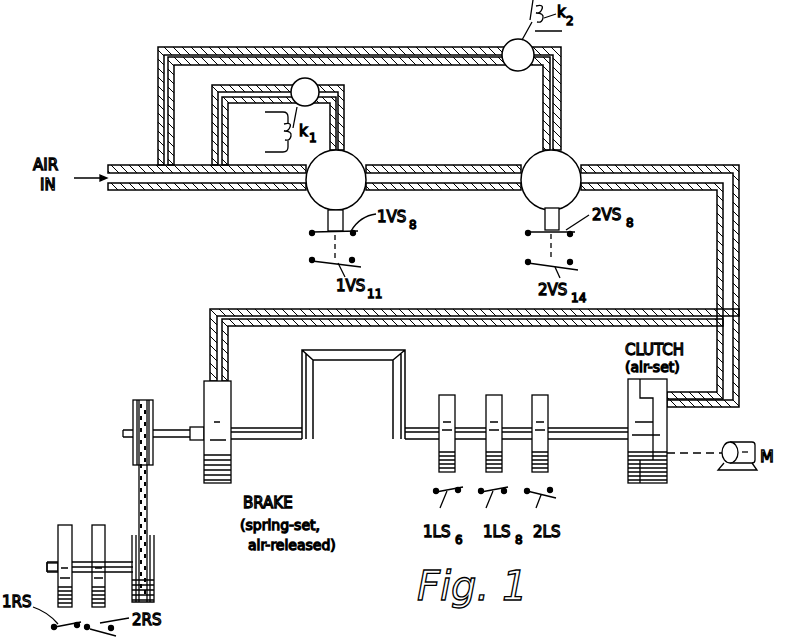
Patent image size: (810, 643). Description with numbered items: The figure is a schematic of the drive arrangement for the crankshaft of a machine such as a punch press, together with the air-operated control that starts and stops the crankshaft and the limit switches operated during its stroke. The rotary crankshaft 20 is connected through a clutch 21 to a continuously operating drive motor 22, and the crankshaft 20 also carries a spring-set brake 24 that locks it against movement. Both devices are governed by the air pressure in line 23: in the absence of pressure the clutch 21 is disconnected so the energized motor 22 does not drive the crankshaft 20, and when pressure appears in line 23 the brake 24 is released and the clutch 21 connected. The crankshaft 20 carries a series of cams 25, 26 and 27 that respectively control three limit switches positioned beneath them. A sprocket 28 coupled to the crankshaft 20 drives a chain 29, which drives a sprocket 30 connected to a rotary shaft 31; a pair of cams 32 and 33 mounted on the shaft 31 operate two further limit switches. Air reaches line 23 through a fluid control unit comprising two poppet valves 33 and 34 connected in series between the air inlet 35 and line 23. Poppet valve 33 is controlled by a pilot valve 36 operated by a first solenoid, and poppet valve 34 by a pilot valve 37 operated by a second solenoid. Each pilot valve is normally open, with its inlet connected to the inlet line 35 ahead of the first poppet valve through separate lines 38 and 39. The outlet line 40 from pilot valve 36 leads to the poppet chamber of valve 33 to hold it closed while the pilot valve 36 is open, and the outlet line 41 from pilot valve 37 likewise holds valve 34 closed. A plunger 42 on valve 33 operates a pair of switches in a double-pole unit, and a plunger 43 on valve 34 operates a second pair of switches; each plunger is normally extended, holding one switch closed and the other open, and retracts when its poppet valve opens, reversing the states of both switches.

The rotary crankshaft 20 is at (406, 381).
The clutch 21 is at (627, 388).
The drive motor 22 is at (742, 442).
The air line 23 is at (739, 260).
The brake 24 is at (232, 470).
The cam 25 is at (451, 395).
The cam 26 is at (497, 395).
The cam 27 is at (543, 395).
The sprocket 28 is at (133, 410).
The chain 29 is at (138, 507).
The sprocket 30 is at (154, 582).
The rotary shaft 31 is at (82, 561).
The cam 32 is at (58, 526).
The poppet valve 33 is at (357, 155).
The poppet valve 34 is at (576, 158).
The air inlet 35 is at (122, 165).
The pilot valve 36 is at (319, 86).
The pilot valve 37 is at (507, 42).
The line 38 is at (212, 153).
The line 39 is at (300, 48).
The outlet line 40 is at (345, 116).
The outlet line 41 is at (561, 109).
The plunger 42 is at (327, 216).
The plunger 43 is at (545, 216).